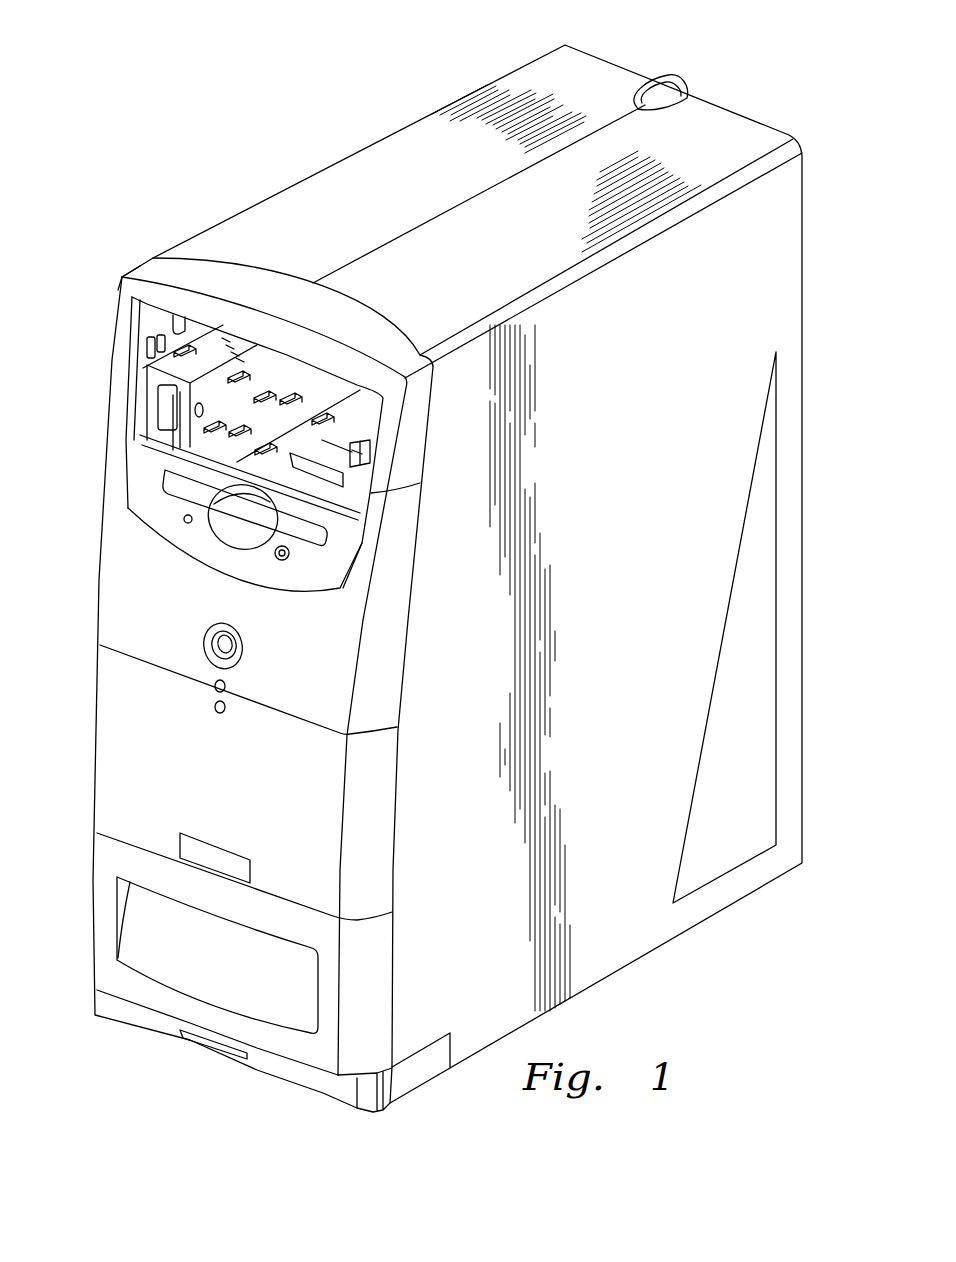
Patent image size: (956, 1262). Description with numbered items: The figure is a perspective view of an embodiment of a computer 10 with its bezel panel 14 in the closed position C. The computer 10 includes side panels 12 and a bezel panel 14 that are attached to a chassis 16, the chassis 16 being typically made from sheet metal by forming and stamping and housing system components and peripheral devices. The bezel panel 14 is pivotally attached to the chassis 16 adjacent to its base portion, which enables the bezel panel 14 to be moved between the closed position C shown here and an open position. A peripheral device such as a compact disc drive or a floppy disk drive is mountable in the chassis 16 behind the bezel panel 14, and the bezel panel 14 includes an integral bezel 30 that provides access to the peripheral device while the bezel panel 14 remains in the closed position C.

The computer 10 is at (450, 68).
The side panels 12 is at (305, 193).
The bezel panel 14 is at (112, 623).
The chassis 16 is at (188, 370).
The integral bezel 30 is at (170, 503).
The closed position C is at (115, 252).